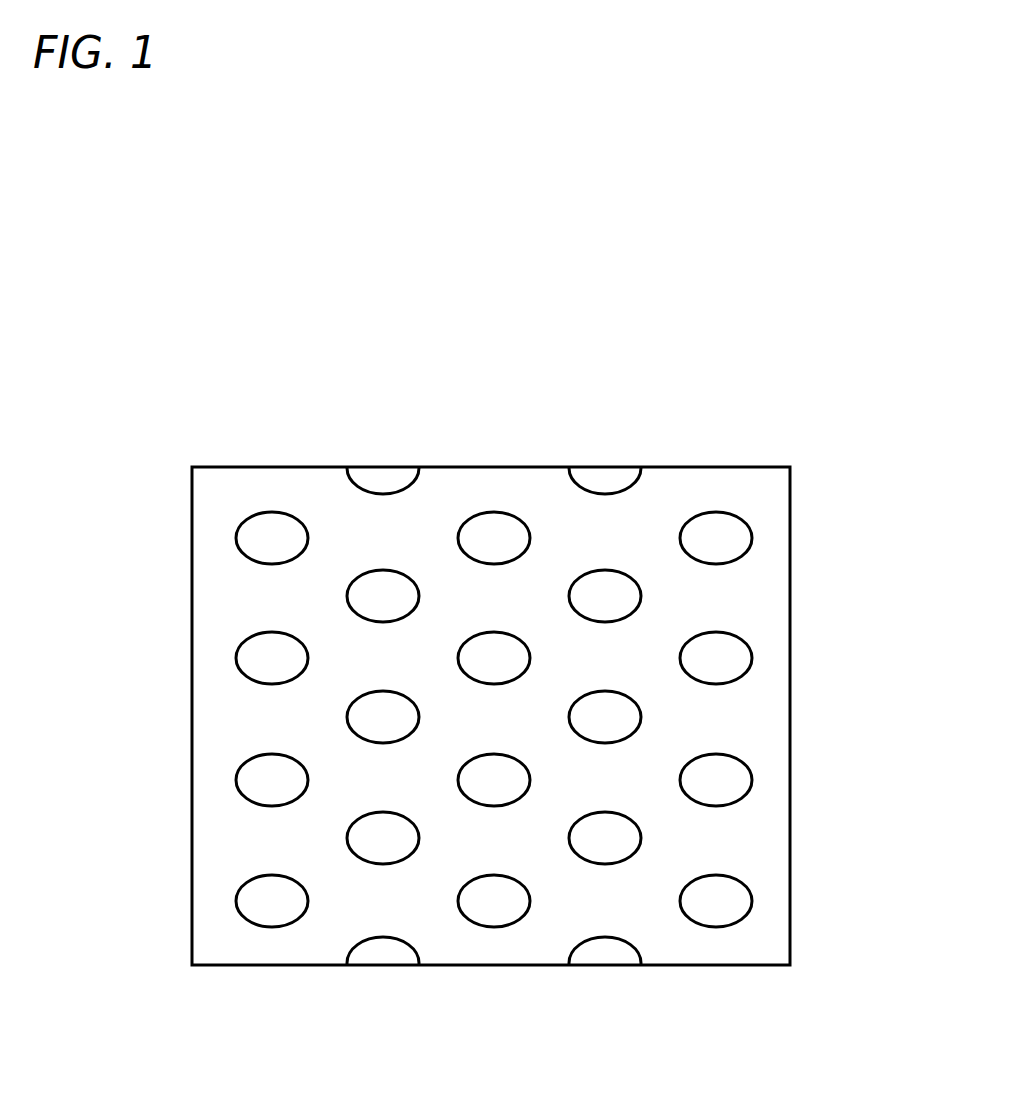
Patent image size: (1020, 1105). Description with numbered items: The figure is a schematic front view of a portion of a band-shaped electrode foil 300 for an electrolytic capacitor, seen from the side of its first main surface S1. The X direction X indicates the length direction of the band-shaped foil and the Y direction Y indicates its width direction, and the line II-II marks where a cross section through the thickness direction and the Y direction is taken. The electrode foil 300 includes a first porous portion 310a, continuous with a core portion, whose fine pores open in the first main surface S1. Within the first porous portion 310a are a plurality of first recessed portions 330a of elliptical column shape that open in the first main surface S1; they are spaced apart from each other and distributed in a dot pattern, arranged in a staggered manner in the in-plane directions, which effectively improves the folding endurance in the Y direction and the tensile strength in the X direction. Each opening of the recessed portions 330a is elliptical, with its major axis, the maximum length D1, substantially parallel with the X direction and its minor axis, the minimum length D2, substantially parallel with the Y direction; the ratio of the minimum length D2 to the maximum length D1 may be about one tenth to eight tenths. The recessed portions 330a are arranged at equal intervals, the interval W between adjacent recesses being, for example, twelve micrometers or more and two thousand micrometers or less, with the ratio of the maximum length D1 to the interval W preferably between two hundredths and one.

The electrode foil 300 is at (168, 443).
The first porous portion 310a is at (520, 487).
The first recessed portions 330a is at (718, 660).
The first main surface S1 is at (467, 500).
The maximum length of the openings D1 is at (752, 537).
The minimum length of the openings D2 is at (716, 512).
The interval between adjacent first recessed portions W is at (355, 700).
The line II- II is at (272, 450).
The X direction X is at (821, 958).
The Y direction Y is at (821, 958).